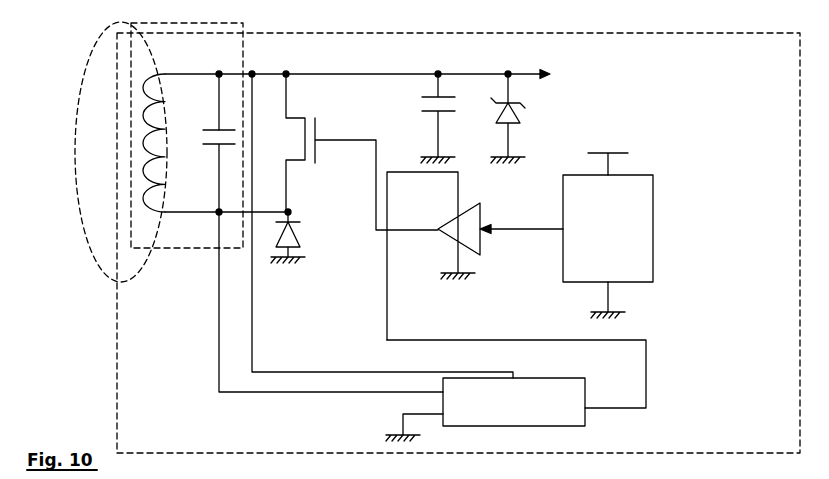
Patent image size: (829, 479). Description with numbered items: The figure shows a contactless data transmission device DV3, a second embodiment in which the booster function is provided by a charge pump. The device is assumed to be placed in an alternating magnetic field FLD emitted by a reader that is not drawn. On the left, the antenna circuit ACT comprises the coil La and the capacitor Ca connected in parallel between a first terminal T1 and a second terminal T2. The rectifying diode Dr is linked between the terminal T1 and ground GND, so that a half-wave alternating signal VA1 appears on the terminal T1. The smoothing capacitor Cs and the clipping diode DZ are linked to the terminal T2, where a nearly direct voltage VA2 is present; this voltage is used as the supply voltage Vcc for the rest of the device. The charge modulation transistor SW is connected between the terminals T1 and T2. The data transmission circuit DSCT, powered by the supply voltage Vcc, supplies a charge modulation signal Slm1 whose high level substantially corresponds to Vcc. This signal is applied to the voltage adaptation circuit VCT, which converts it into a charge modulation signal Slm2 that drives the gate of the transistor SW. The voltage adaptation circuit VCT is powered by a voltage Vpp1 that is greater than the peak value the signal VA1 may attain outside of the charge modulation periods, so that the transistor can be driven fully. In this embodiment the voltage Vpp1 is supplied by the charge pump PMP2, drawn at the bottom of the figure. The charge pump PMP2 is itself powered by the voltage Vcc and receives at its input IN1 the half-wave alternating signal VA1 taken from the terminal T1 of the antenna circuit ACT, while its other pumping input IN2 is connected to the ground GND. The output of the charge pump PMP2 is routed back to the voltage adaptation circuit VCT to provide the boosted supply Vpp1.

The contactless device DV3 is at (170, 442).
The antenna circuit ACT is at (243, 55).
The alternating magnetic field FLD is at (90, 255).
The coil La is at (152, 216).
The nearly direct voltage VA2 is at (352, 65).
The half-wave alternating signal VA1 is at (226, 201).
The supply voltage Vcc is at (440, 221).
The terminal T2 is at (219, 74).
The terminal T1 is at (219, 214).
The capacitor Ca is at (209, 129).
The charge modulation transistor SW is at (316, 150).
The rectifying diode Dr is at (300, 236).
The ground GND is at (336, 258).
The smoothing capacitor Cs is at (434, 112).
The clipping diode DZ is at (519, 118).
The voltage adaptation circuit VCT is at (452, 243).
The charge modulation signal Slm2 is at (418, 220).
The charge modulation signal Slm1 is at (521, 222).
The voltage Vpp1 is at (516, 295).
The data transmission circuit DSCT is at (631, 241).
The charge pump PMP2 is at (537, 412).
The input IN1 is at (461, 391).
The input IN2 is at (431, 422).